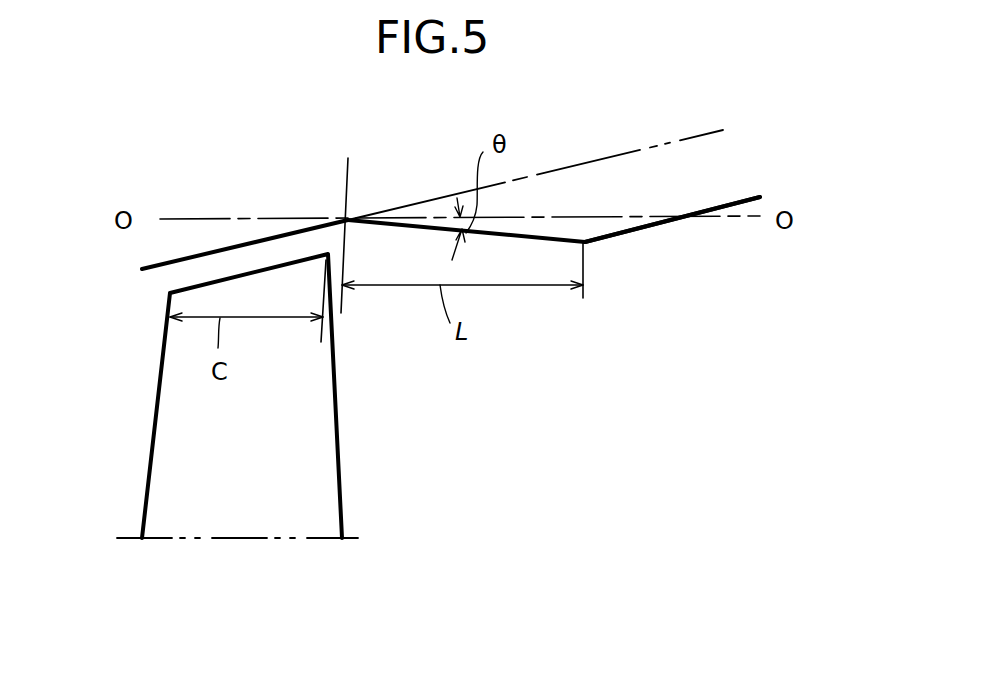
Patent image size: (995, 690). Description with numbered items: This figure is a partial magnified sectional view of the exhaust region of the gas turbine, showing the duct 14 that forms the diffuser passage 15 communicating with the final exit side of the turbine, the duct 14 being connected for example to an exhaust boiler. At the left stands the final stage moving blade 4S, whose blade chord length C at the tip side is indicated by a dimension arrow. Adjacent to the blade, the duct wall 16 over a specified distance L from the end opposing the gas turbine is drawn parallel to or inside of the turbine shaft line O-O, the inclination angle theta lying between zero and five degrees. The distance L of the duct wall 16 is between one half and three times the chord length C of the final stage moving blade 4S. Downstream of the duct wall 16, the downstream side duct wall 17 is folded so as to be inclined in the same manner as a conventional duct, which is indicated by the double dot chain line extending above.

The final stage moving blade 4S is at (173, 456).
The duct 14 is at (615, 215).
The diffuser passage 15 is at (573, 492).
The duct wall 16 is at (418, 225).
The downstream side duct wall 17 is at (650, 223).